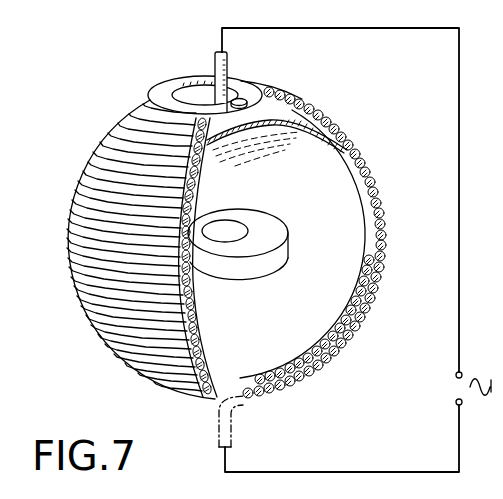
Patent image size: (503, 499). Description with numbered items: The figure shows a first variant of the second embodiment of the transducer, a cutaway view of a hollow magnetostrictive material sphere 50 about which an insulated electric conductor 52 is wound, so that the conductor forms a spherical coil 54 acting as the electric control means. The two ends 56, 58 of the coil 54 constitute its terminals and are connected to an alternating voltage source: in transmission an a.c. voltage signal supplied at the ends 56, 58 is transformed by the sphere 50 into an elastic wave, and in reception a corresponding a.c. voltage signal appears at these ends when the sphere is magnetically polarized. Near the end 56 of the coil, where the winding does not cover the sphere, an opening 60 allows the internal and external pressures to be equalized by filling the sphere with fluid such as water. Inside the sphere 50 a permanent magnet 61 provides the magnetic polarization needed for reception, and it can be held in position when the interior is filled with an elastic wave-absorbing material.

The hollow magnetostrictive material sphere 50 is at (270, 113).
The insulated electric conductor 52 is at (150, 176).
The spherical coil 54 is at (62, 190).
The end of coil 56 is at (214, 67).
The end of coil 58 is at (232, 427).
The opening 60 is at (240, 98).
The permanent magnet 61 is at (268, 218).